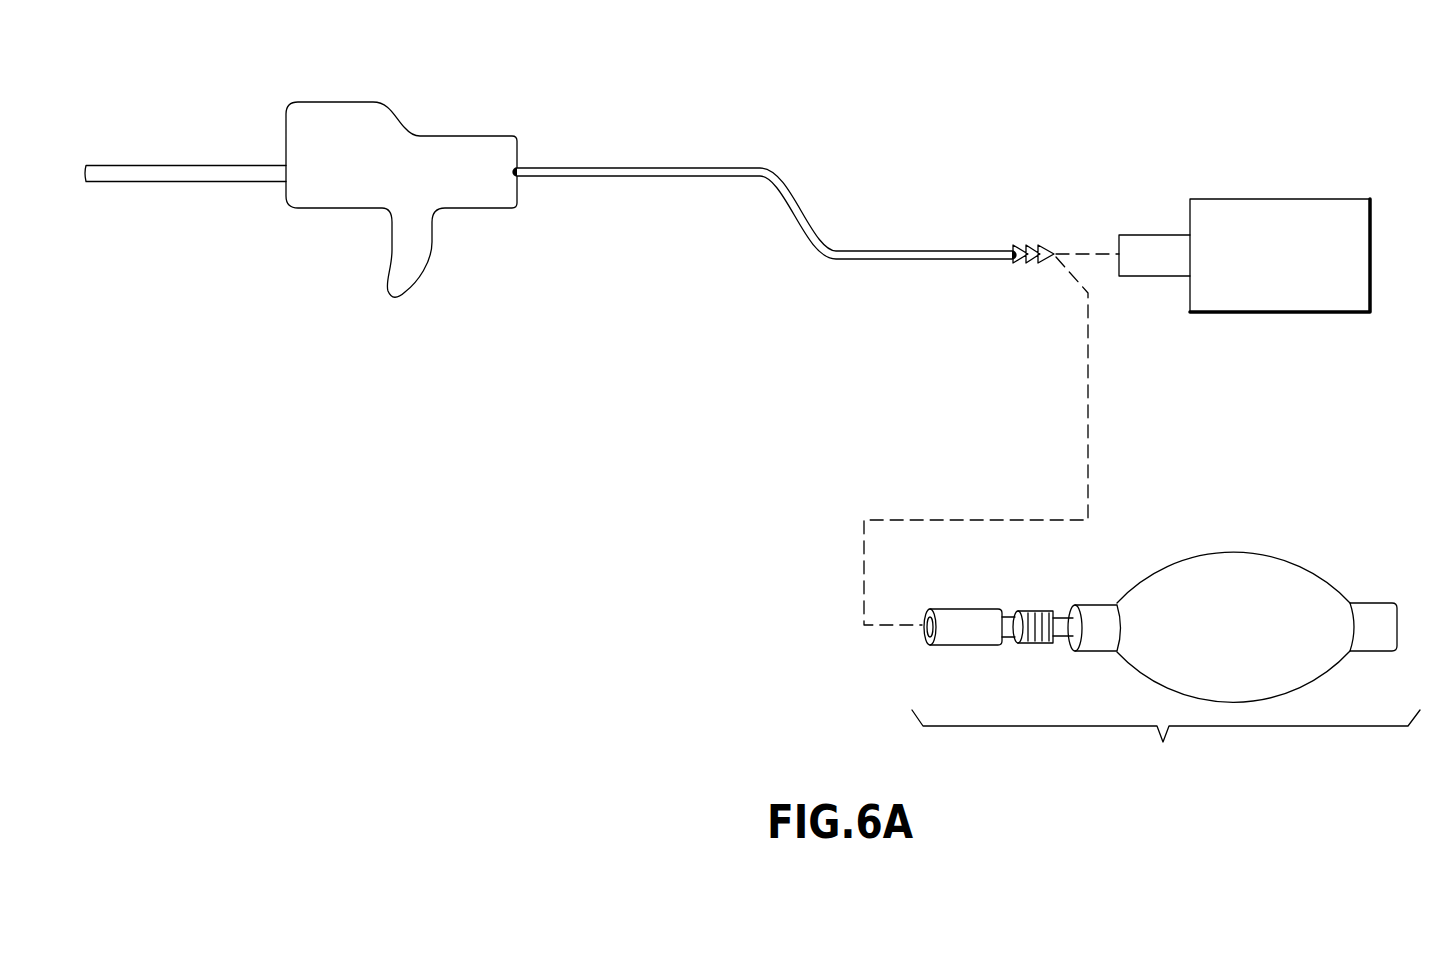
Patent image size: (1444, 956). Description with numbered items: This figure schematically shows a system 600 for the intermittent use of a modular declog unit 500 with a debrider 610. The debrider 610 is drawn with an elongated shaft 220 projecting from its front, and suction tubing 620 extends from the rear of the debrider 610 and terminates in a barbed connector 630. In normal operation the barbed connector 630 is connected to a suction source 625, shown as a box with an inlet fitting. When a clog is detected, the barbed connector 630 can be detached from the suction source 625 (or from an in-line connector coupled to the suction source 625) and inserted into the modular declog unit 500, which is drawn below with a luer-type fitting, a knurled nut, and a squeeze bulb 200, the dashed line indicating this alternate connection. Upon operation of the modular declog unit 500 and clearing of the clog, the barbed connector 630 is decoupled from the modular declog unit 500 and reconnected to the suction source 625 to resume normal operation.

The system 600 is at (910, 143).
The debrider 610 is at (404, 115).
The shaft 220 is at (177, 182).
The suction tubing 620 is at (760, 167).
The barbed connector 630 is at (1031, 245).
The suction source 625 is at (1277, 198).
The balloon 200 is at (1279, 556).
The modular declog unit 500 is at (1166, 649).